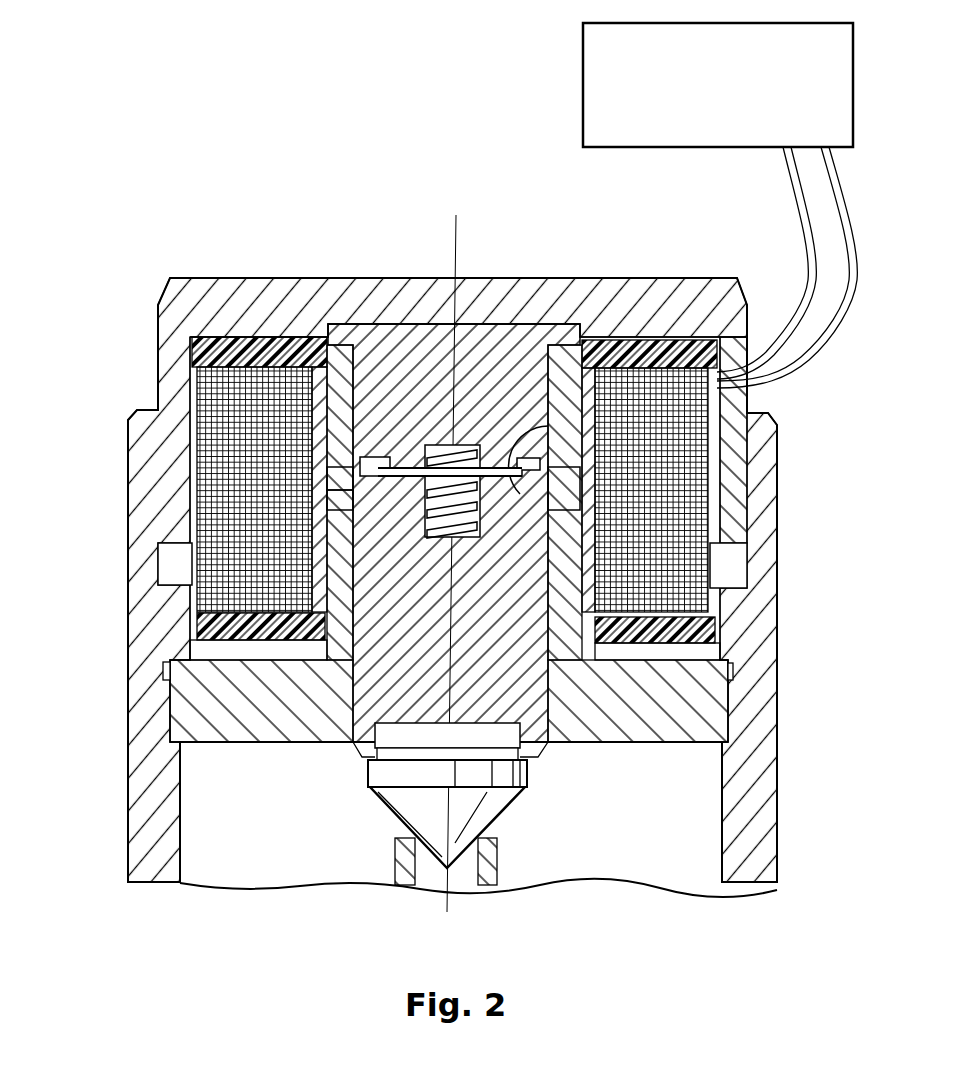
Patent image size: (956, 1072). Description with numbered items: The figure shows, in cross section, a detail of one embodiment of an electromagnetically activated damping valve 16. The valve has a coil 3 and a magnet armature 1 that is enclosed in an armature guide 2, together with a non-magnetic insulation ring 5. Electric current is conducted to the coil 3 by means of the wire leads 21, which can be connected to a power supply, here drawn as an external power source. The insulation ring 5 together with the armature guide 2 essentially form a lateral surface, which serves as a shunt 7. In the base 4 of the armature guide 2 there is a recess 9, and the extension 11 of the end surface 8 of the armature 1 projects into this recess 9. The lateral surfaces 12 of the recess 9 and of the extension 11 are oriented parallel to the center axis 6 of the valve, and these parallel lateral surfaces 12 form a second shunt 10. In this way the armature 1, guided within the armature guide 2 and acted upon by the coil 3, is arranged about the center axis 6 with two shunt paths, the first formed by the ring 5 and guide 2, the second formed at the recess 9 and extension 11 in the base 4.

The magnet armature 1 is at (545, 750).
The armature guide 2 is at (690, 701).
The coil 3 is at (190, 632).
The base 4 is at (605, 409).
The non-magnetic insulation ring 5 is at (310, 556).
The center axis 6 is at (456, 233).
The shunt 7 is at (318, 457).
The end surface 8 is at (605, 510).
The recess 9 is at (378, 347).
The second shunt 10 is at (605, 448).
The extension 11 is at (605, 480).
The lateral surfaces 12 is at (330, 500).
The electromagnetically activated damping valve 16 is at (140, 348).
The wire leads 21 is at (758, 368).